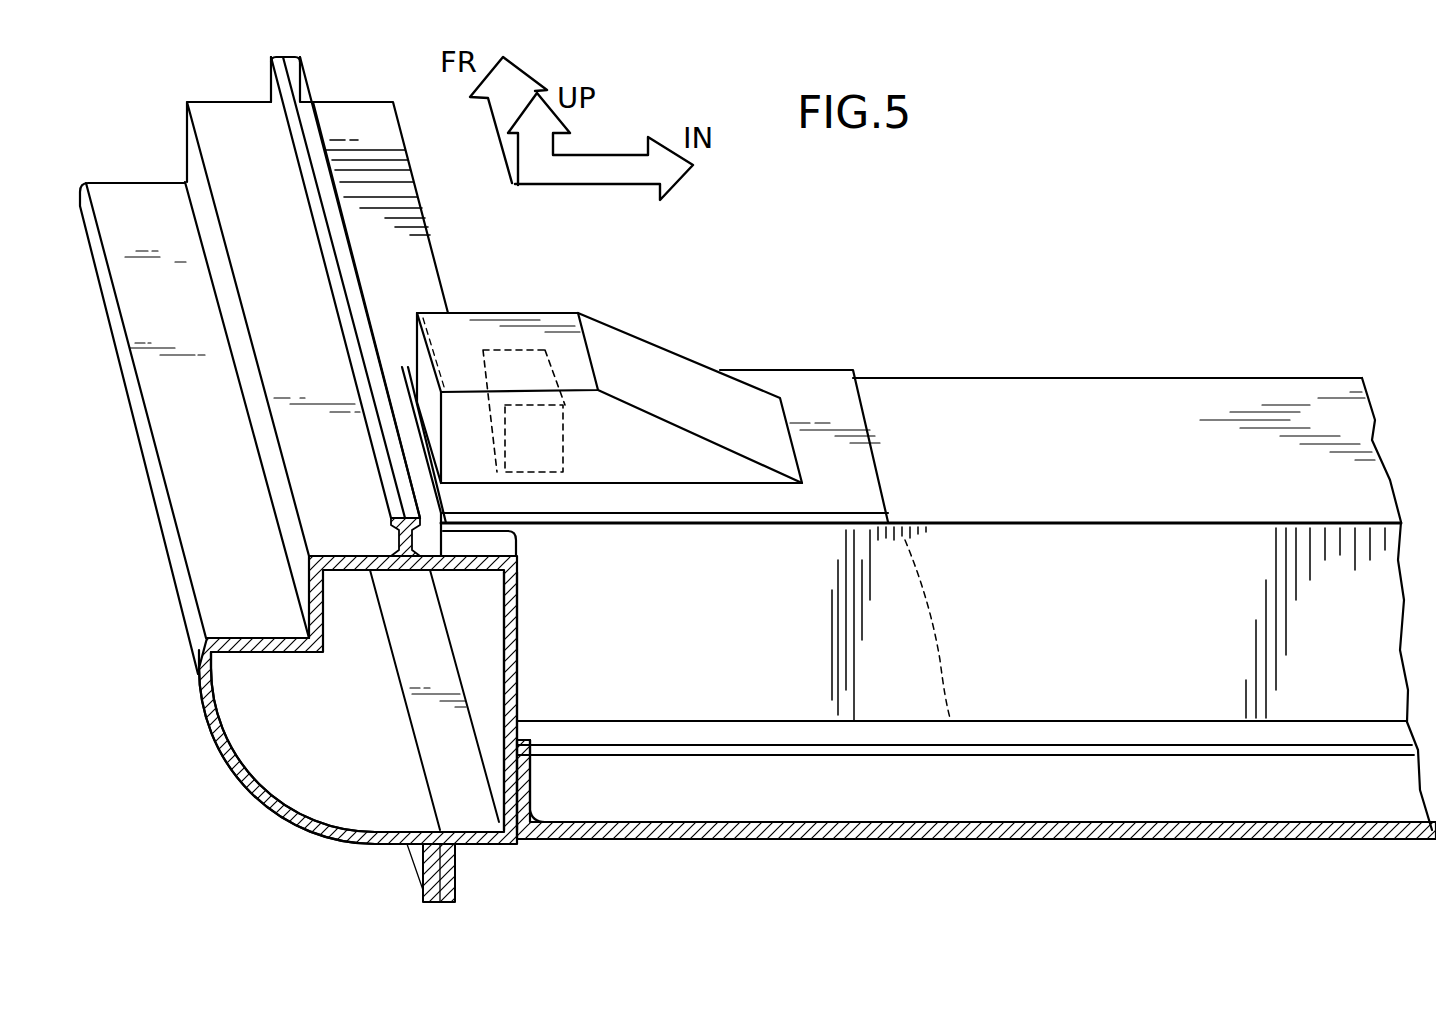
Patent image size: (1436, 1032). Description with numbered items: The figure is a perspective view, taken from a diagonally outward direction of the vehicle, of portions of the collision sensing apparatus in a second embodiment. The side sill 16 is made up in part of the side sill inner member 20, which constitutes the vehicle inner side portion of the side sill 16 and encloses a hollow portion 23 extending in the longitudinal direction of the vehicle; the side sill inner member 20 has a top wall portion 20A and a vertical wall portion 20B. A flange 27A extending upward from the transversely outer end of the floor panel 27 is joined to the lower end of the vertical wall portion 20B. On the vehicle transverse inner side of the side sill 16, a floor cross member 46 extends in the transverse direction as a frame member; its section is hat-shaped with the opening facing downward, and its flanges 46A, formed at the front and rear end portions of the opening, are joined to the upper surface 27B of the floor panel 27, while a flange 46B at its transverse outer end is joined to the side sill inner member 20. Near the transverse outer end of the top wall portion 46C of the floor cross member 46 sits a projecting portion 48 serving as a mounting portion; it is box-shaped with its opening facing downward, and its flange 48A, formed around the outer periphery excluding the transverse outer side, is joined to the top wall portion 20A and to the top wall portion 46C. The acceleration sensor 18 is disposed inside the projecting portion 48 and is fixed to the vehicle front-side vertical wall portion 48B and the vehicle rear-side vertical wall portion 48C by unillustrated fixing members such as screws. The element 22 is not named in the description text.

The side sill 16 is at (262, 850).
The acceleration sensor 18 is at (516, 365).
The side sill inner member 20 is at (488, 846).
The top wall portion 20A is at (413, 284).
The vertical wall portion 20B is at (519, 682).
The seal lip 22 is at (360, 845).
The hollow portion 23 is at (366, 763).
The floor panel 27 is at (976, 810).
The flange 27A is at (535, 800).
The upper surface 27B is at (882, 797).
The floor cross member 46 is at (917, 553).
The flanges 46A is at (918, 723).
The flange 46B is at (520, 542).
The top wall portion 46C is at (950, 448).
The projecting portion 48 is at (652, 388).
The flange 48A is at (803, 388).
The vehicle front-side vertical wall portion 48B is at (550, 317).
The vehicle rear-side vertical wall portion 48C is at (600, 412).